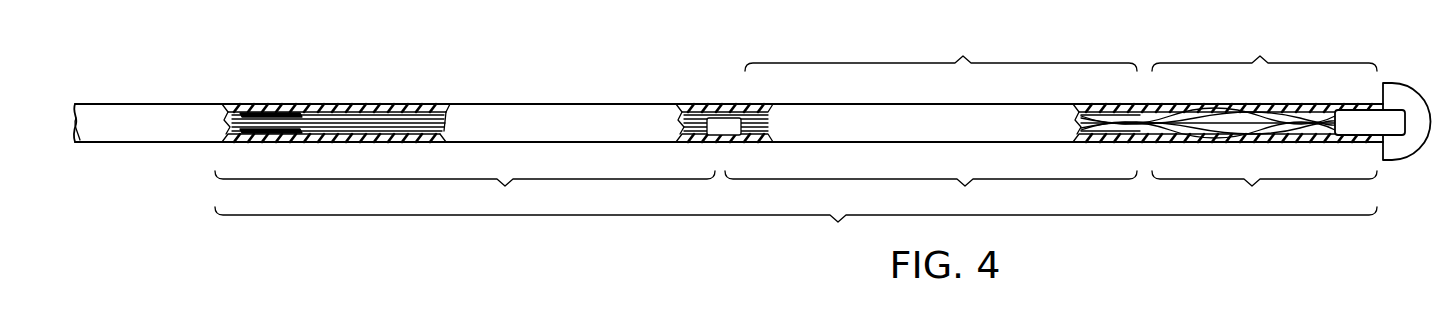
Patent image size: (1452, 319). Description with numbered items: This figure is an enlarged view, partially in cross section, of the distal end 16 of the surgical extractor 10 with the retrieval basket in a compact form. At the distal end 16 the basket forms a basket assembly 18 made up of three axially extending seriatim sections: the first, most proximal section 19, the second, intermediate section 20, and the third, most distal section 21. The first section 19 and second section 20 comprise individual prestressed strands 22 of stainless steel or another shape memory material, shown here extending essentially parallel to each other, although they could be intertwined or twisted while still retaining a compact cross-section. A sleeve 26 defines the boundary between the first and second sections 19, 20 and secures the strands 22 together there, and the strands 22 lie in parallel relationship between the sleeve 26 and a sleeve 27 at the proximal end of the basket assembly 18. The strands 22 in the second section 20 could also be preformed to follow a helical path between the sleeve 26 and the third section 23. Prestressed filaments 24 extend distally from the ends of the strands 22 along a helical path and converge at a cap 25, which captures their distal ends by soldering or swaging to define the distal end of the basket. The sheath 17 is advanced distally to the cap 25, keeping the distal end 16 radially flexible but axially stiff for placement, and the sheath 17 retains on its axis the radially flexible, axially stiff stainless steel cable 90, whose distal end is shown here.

The surgical extractor 10 is at (437, 100).
The distal end 16 is at (612, 90).
The sheath 17 is at (642, 140).
The basket assembly 18 is at (796, 229).
The first section 19 is at (465, 191).
The second section 20 is at (337, 112).
The third section 21 is at (1061, 120).
The prestressed strands 22 is at (1098, 125).
The third section 23 is at (1264, 50).
The prestressed filaments 24 is at (1205, 125).
The cap 25 is at (1392, 112).
The sleeve 26 is at (722, 126).
The sleeve 27 is at (276, 108).
The cable 90 is at (226, 143).